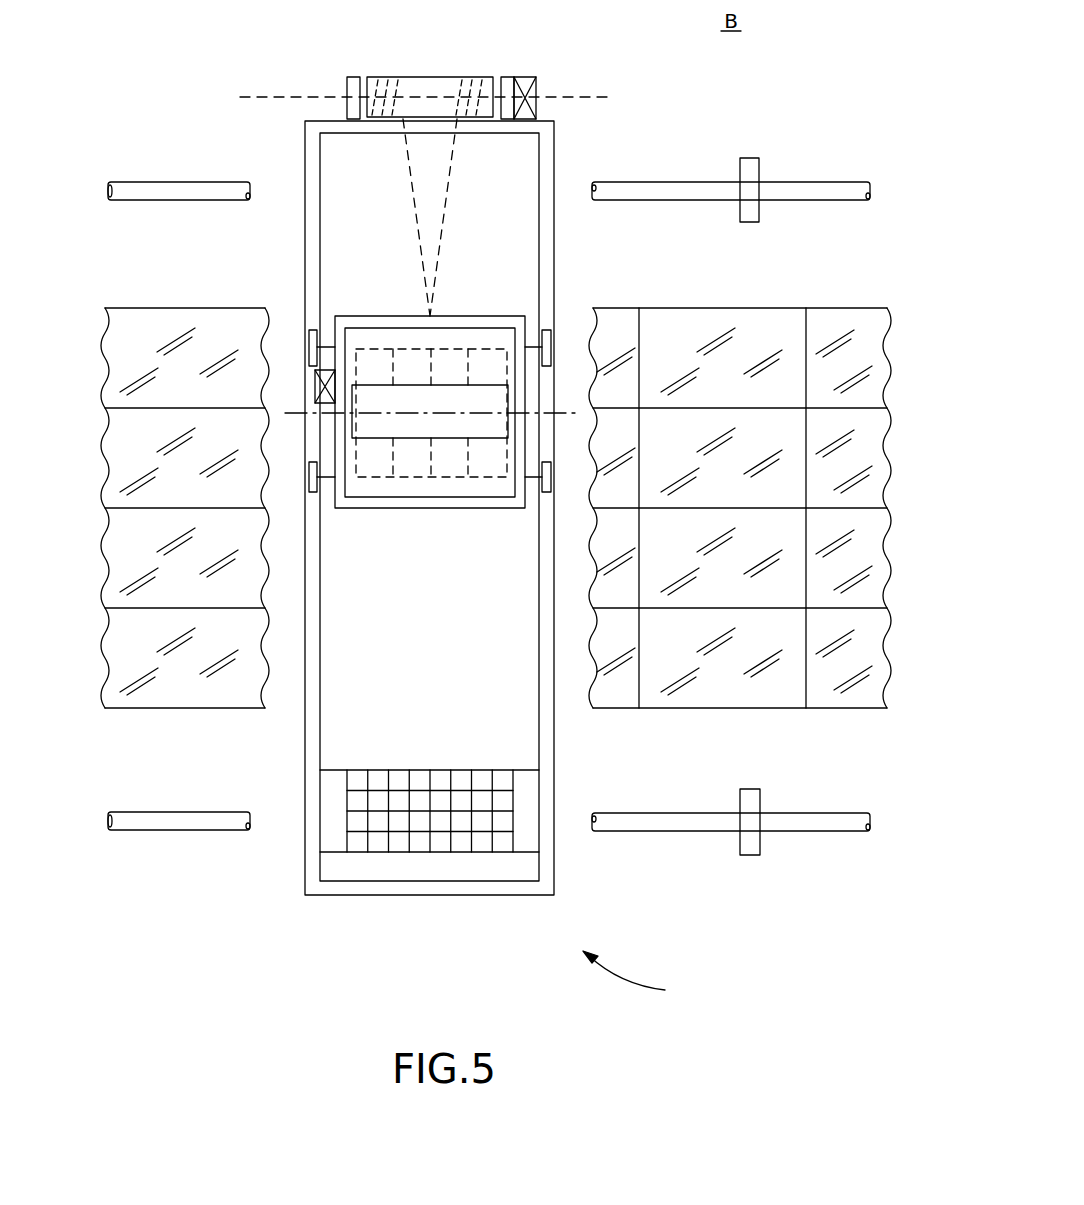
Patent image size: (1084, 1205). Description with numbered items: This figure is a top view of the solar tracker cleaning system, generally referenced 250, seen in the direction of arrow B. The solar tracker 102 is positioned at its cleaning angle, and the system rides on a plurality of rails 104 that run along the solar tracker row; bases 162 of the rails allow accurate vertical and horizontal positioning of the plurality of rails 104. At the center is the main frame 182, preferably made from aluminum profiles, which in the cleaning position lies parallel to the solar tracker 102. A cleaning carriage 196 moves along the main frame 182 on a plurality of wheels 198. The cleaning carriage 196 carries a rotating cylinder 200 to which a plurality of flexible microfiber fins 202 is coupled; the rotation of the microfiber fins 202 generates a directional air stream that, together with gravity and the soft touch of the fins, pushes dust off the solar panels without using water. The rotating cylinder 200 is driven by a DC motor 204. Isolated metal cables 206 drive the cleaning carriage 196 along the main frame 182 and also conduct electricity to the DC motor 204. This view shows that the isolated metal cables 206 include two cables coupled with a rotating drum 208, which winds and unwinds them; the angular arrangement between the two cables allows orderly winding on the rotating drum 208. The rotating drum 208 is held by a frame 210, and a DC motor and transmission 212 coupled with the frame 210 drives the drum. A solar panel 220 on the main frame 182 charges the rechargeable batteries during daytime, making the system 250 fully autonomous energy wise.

The solar tracker 102 is at (175, 318).
The plurality of rails 104 is at (190, 187).
The bases of the plurality of rails 162 is at (750, 165).
The main frame 182 is at (312, 660).
The cleaning carriage 196 is at (448, 323).
The plurality of wheels 198 is at (309, 340).
The rotating cylinder 200 is at (413, 397).
The plurality of microfiber fins 202 is at (372, 367).
The DC motor 204 is at (315, 380).
The isolated metal cables 206 is at (452, 158).
The rotating drum 208 is at (423, 83).
The frame 210 is at (352, 77).
The DC motor and transmission 212 is at (537, 90).
The solar panel 220 is at (420, 785).
The system 250 is at (650, 979).